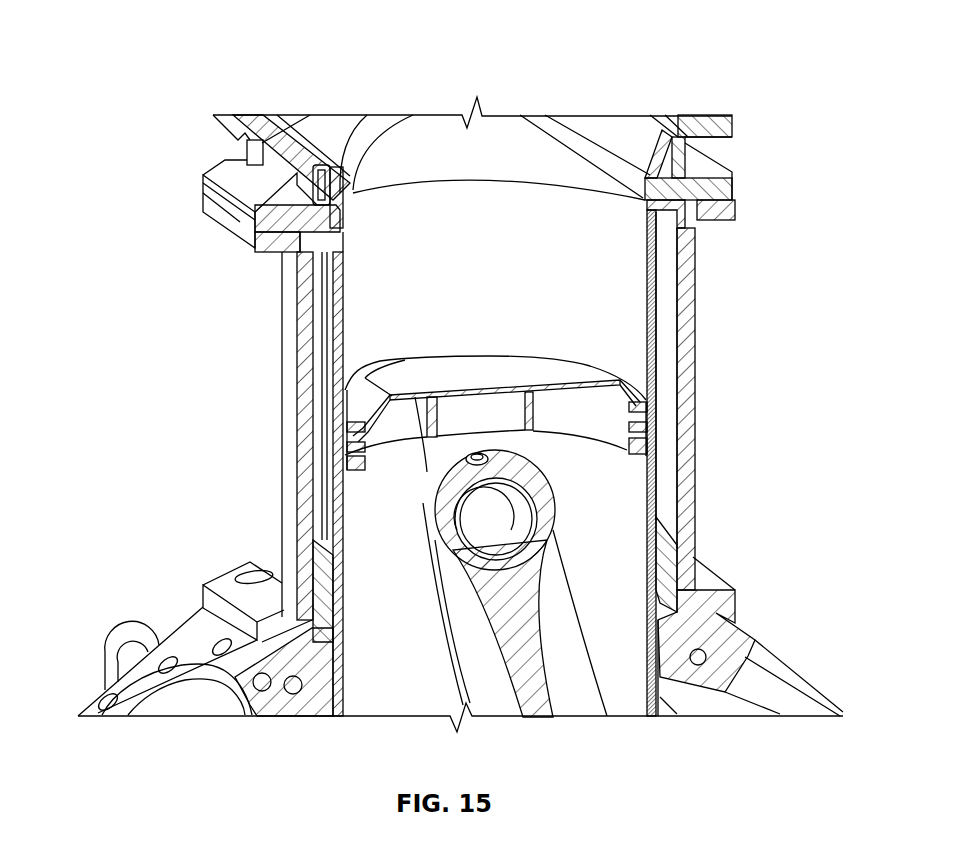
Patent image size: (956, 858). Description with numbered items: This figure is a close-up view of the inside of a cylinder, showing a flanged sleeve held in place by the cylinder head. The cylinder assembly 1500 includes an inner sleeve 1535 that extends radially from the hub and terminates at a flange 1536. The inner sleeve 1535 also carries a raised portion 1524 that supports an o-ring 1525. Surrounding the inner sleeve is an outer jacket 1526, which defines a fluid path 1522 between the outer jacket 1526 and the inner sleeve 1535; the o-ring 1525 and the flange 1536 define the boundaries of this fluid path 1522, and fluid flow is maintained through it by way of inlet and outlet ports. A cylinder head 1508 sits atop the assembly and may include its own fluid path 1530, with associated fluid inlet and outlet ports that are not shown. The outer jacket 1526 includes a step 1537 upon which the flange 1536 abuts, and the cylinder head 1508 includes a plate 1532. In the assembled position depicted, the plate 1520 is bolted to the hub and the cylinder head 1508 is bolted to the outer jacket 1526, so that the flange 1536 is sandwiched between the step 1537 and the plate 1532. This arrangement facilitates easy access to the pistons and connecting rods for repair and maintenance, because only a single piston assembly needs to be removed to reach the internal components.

The cylinder assembly 1500 is at (148, 44).
The cylinder head 1508 is at (222, 122).
The fluid path 1530 is at (693, 118).
The plate 1532 is at (735, 183).
The flange 1536 is at (663, 208).
The step 1537 is at (300, 258).
The inner sleeve 1535 is at (653, 283).
The fluid path 1522 is at (666, 363).
The outer jacket 1526 is at (693, 430).
The raised portion 1524 is at (669, 557).
The o-ring 1525 is at (674, 572).
The plate 1520 is at (222, 584).